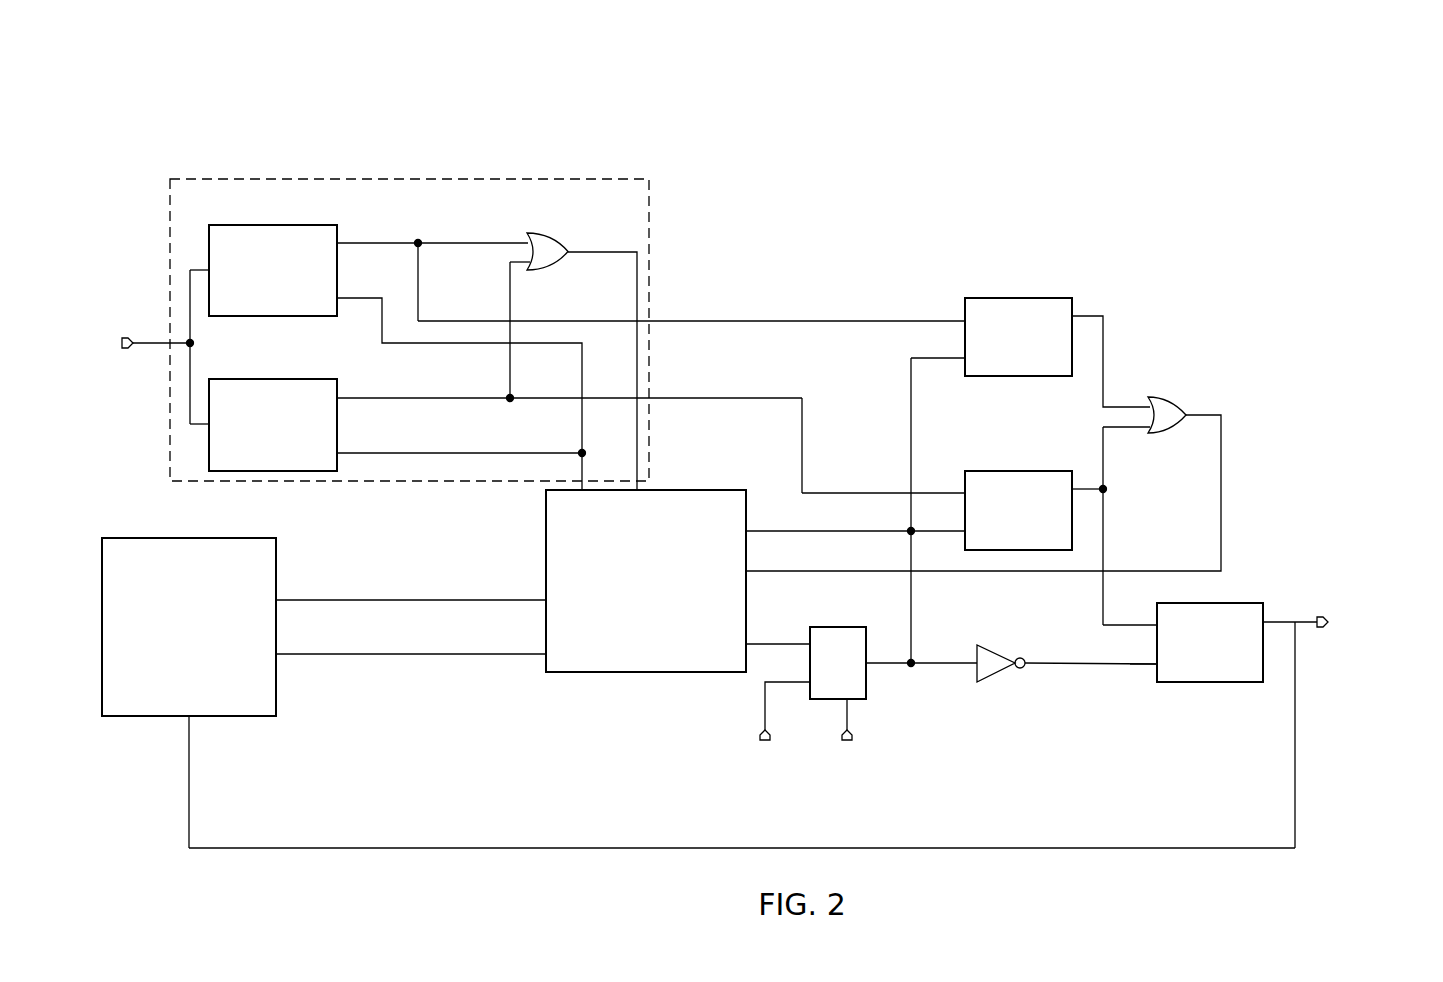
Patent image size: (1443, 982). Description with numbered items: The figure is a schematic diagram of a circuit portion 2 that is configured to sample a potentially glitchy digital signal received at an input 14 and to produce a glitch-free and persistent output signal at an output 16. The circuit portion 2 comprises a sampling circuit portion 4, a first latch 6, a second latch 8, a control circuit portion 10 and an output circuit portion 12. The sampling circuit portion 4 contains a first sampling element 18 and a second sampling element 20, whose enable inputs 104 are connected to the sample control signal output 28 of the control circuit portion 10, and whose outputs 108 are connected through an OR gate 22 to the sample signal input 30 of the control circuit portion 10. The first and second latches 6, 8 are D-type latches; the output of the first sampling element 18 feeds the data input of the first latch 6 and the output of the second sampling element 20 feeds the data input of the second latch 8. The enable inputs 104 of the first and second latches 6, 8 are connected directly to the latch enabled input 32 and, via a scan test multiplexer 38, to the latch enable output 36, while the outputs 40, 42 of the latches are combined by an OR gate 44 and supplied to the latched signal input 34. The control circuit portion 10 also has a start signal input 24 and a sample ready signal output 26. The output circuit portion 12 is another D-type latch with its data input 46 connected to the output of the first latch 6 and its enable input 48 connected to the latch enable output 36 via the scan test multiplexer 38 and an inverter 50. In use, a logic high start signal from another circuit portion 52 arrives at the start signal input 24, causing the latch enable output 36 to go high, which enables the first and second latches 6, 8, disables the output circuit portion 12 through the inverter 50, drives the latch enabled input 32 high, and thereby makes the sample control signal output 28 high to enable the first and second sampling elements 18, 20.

The circuit portion 2 is at (1280, 173).
The sampling circuit portion 4 is at (545, 178).
The first latch 6 is at (974, 471).
The second latch 8 is at (1052, 297).
The control circuit portion 10 is at (642, 672).
The output circuit portion 12 is at (1206, 682).
The input 14 is at (125, 337).
The output 16 is at (1323, 625).
The first sampling element 18 is at (207, 453).
The second sampling element 20 is at (322, 225).
The OR gate 22 is at (550, 242).
The start signal input 24 is at (543, 655).
The sample ready signal output 26 is at (538, 600).
The sample control signal output 28 is at (580, 490).
The sample signal input 30 is at (635, 490).
The latch enabled input 32 is at (747, 531).
The latched signal input 34 is at (747, 571).
The latch enable output 36 is at (747, 643).
The scan test multiplexer 38 is at (855, 700).
The output of the first latch 40 is at (1075, 488).
The output of the second latch 42 is at (1073, 310).
The OR gate 44 is at (1168, 395).
The data input 46 is at (1155, 628).
The enable input 48 is at (1155, 667).
The inverter 50 is at (992, 678).
The another circuit portion 52 is at (262, 717).
The enable inputs 104 is at (337, 297).
The outputs 108 is at (338, 242).